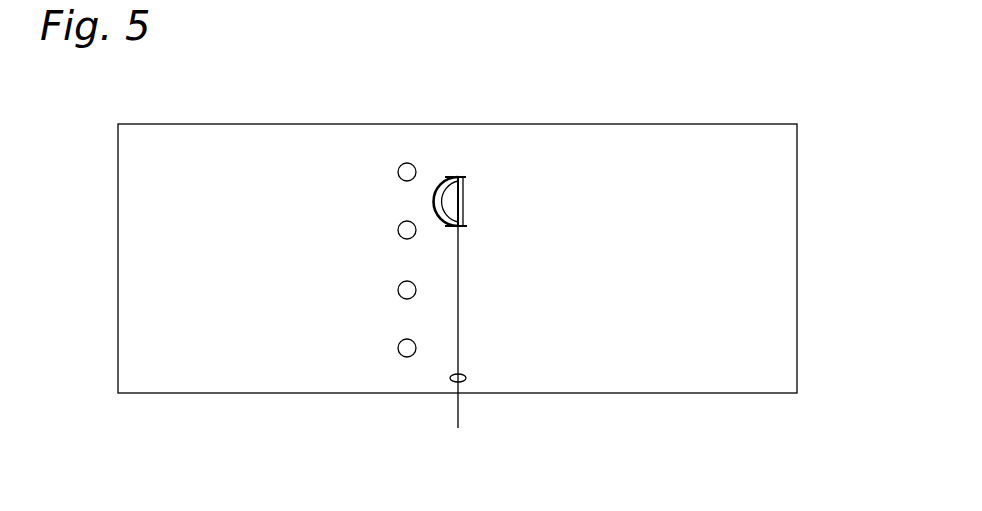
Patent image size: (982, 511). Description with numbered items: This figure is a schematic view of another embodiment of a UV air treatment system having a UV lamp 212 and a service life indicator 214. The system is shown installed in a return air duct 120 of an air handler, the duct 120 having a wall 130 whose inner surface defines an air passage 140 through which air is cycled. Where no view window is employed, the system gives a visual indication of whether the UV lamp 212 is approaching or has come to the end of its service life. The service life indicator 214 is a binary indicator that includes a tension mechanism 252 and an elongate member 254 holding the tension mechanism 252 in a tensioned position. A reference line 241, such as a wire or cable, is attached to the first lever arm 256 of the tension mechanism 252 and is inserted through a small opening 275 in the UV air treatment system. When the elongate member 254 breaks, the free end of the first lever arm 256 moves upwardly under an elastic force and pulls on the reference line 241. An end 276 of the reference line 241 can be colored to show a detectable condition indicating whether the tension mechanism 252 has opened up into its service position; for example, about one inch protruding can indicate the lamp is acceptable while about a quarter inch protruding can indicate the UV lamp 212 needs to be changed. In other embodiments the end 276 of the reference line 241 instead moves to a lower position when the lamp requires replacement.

The return air duct 120 is at (672, 80).
The wall 130 is at (215, 365).
The air passage 140 is at (727, 368).
The UV lamp 212 is at (399, 237).
The service life indicator 214 is at (406, 189).
The reference line 241 is at (440, 235).
The tension mechanism 252 is at (447, 177).
The elongate member 254 is at (462, 208).
The first lever arm 256 is at (445, 179).
The small opening 275 is at (452, 383).
The end of the reference line 276 is at (458, 417).